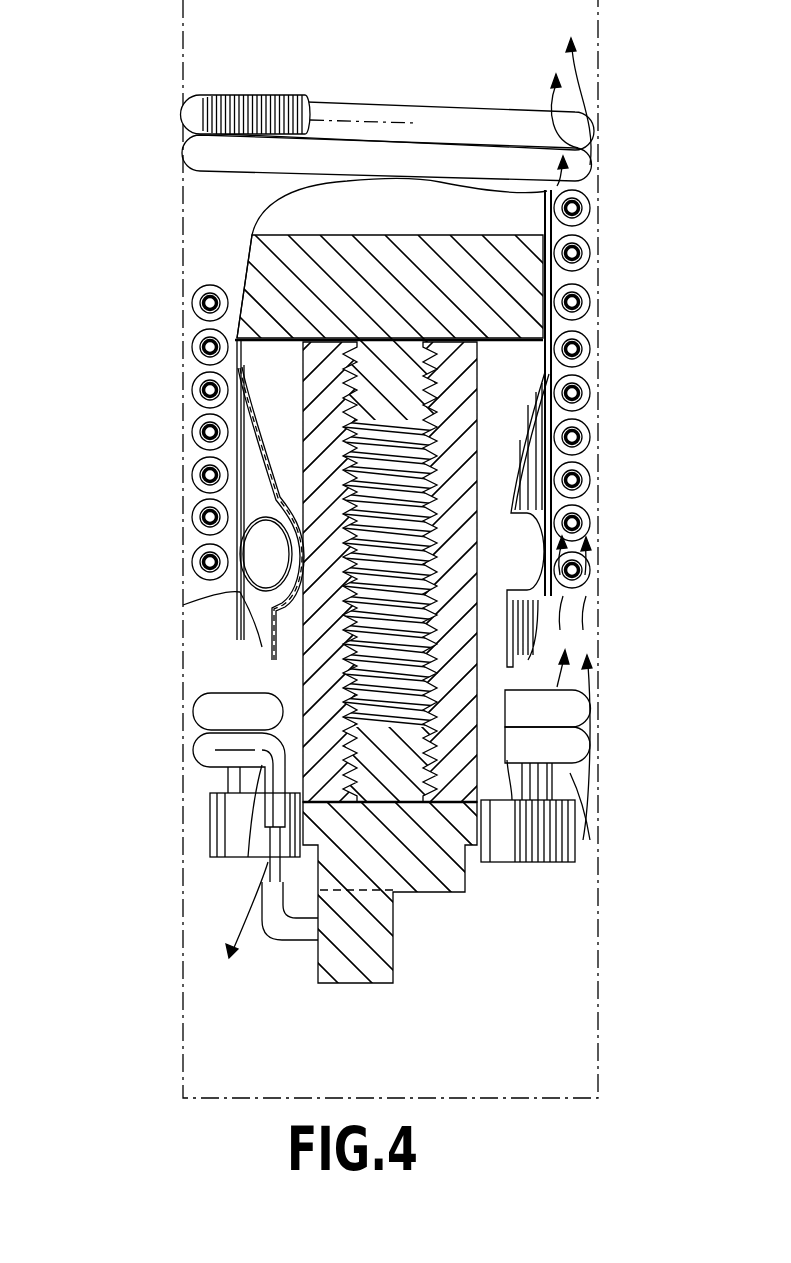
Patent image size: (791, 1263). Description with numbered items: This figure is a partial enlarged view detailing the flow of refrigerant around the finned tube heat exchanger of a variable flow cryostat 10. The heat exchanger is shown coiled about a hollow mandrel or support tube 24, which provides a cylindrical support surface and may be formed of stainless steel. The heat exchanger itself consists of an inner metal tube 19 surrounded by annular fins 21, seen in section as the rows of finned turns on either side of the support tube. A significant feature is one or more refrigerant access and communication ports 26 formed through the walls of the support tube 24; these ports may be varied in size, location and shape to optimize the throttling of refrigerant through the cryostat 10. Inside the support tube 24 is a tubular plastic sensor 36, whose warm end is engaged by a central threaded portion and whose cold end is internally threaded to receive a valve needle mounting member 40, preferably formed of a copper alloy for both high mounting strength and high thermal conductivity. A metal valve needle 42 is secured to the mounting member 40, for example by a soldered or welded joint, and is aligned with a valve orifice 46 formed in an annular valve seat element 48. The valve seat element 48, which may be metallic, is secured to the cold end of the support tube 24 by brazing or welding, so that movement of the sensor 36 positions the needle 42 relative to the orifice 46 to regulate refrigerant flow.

The variable flow cryostat 10 is at (158, 353).
The inner metal tube 19 is at (582, 393).
The annular fins 21 is at (582, 290).
The support tube 24 is at (243, 480).
The refrigerant access and communication ports 26 is at (263, 570).
The tubular plastic sensor 36 is at (312, 657).
The valve needle mounting member 40 is at (424, 893).
The valve needle 42 is at (297, 942).
The valve orifice 46 is at (270, 862).
The valve seat element 48 is at (527, 867).